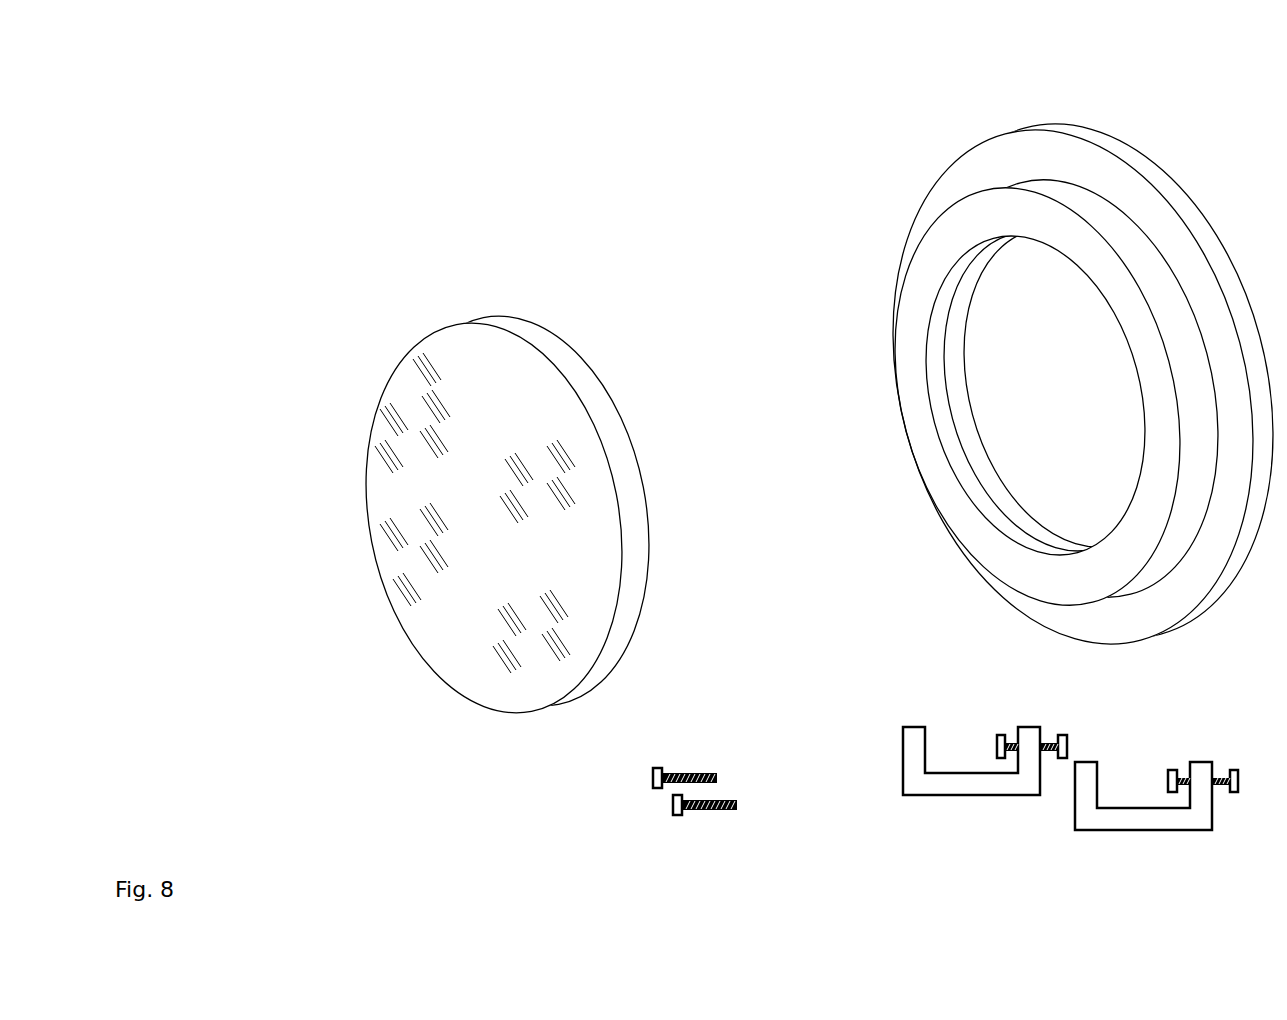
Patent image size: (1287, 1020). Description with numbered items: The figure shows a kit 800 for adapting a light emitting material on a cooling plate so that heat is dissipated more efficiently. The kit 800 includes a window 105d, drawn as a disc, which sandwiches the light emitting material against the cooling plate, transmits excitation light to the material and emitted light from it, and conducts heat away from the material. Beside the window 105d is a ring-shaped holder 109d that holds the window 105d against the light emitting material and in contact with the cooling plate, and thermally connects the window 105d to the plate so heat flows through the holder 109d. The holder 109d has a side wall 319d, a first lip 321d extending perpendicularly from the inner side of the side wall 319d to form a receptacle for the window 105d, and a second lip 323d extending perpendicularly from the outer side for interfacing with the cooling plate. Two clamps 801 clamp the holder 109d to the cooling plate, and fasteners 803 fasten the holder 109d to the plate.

The kit 800 is at (276, 729).
The window 105d is at (367, 470).
The holder 109d is at (1023, 380).
The side wall 319d is at (1058, 192).
The first lip 321d is at (907, 338).
The second lip 323d is at (974, 166).
The clamps 801 is at (1032, 841).
The fasteners 803 is at (647, 835).